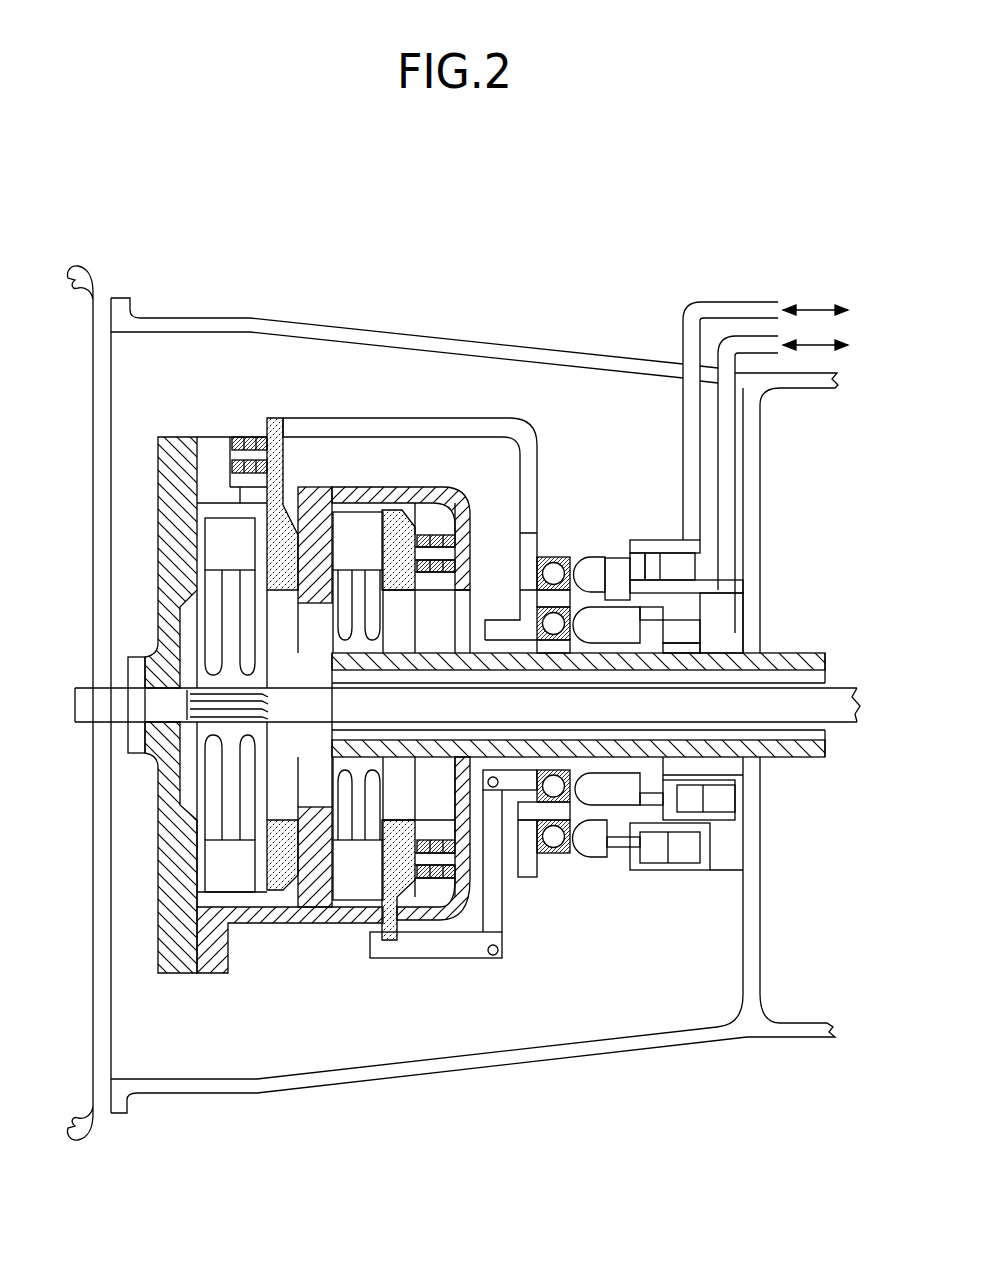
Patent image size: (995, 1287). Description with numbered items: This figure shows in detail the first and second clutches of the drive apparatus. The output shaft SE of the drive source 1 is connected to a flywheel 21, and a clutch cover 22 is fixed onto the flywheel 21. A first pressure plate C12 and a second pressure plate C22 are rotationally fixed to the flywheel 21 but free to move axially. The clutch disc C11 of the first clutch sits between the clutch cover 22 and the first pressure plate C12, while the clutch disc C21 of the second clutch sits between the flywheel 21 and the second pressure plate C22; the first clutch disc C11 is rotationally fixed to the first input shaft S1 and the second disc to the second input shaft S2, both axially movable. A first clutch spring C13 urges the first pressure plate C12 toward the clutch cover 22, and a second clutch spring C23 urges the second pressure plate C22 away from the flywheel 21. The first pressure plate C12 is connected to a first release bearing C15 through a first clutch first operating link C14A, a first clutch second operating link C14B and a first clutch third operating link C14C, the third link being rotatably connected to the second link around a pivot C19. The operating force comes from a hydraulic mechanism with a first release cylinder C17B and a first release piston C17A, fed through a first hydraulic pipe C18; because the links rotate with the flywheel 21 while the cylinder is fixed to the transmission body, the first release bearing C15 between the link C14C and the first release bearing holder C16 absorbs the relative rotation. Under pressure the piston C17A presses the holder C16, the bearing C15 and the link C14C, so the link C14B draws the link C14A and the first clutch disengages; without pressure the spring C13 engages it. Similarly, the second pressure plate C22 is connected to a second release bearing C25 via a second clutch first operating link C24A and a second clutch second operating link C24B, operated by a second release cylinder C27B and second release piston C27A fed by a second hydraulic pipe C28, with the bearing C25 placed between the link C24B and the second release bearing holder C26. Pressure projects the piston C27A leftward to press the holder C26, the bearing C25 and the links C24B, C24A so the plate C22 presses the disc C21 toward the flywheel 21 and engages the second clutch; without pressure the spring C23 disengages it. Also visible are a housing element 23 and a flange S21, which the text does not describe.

The drive source 1 is at (90, 275).
The flywheel 21 is at (168, 975).
The clutch cover 22 is at (255, 923).
The rotor 23 is at (293, 487).
The clutch disc of the second clutch C21 is at (215, 548).
The second pressure plate C22 is at (283, 420).
The second clutch spring C23 is at (250, 437).
The second clutch first operating link C24A is at (370, 430).
The second clutch second operating link C24B is at (517, 558).
The second release bearing C25 is at (557, 557).
The second release bearing holder C26 is at (578, 560).
The second release piston C27A is at (662, 566).
The second release cylinder C27B is at (648, 540).
The second hydraulic pipe C28 is at (718, 303).
The first hydraulic pipe C18 is at (762, 345).
The clutch disc of the first clutch C11 is at (355, 878).
The first pressure plate C12 is at (392, 940).
The first clutch spring C13 is at (430, 878).
The first clutch first operating link C14A is at (460, 952).
The first clutch second operating link C14B is at (498, 952).
The first clutch third operating link C14C is at (503, 790).
The first release bearing C15 is at (557, 855).
The first release bearing holder C16 is at (617, 797).
The first release piston C17A is at (742, 808).
The first release cylinder C17B is at (695, 795).
The pivot C19 is at (473, 857).
The output shaft SE is at (88, 695).
The first input shaft S1 is at (797, 654).
The second input shaft S2 is at (848, 688).
The shaft flange S21 is at (812, 389).